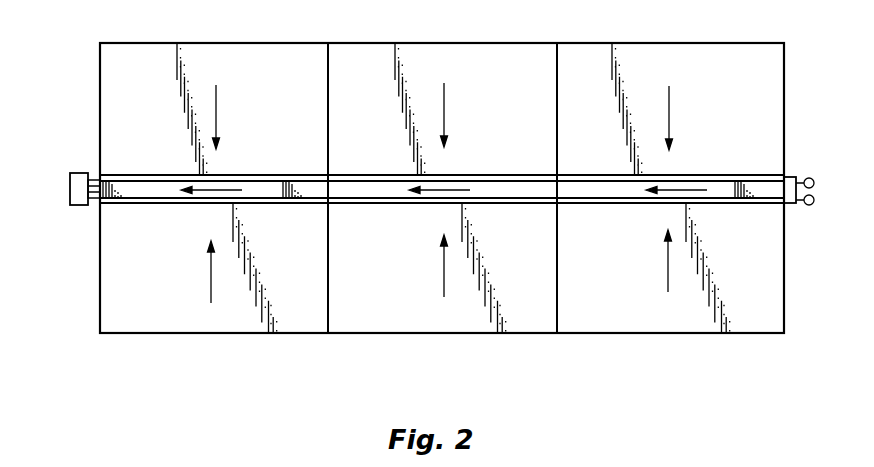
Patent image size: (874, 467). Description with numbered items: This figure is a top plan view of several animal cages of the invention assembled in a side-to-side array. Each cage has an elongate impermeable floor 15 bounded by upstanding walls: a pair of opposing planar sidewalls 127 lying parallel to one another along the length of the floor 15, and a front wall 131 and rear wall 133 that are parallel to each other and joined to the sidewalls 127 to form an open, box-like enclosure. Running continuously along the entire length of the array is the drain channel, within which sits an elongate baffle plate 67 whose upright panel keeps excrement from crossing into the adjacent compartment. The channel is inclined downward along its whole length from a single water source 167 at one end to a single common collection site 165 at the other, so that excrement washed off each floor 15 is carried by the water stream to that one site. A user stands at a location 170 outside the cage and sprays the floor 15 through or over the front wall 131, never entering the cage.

The floor 15 is at (285, 90).
The baffle plate 67 is at (163, 175).
The sidewalls 127 is at (100, 286).
The front wall 131 is at (279, 334).
The rear wall 133 is at (233, 42).
The collection site 165 is at (72, 178).
The water source 167 is at (796, 183).
The location outside of the cage 170 is at (225, 381).